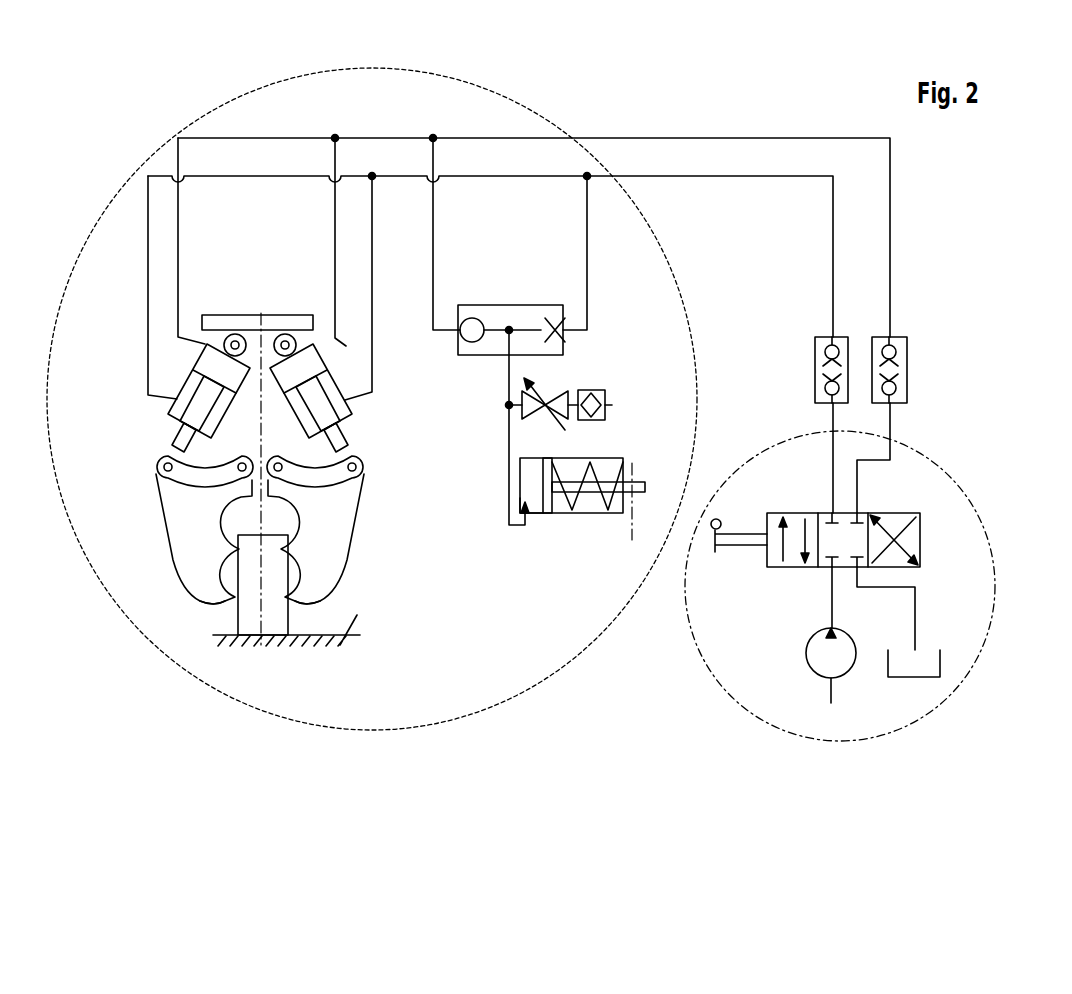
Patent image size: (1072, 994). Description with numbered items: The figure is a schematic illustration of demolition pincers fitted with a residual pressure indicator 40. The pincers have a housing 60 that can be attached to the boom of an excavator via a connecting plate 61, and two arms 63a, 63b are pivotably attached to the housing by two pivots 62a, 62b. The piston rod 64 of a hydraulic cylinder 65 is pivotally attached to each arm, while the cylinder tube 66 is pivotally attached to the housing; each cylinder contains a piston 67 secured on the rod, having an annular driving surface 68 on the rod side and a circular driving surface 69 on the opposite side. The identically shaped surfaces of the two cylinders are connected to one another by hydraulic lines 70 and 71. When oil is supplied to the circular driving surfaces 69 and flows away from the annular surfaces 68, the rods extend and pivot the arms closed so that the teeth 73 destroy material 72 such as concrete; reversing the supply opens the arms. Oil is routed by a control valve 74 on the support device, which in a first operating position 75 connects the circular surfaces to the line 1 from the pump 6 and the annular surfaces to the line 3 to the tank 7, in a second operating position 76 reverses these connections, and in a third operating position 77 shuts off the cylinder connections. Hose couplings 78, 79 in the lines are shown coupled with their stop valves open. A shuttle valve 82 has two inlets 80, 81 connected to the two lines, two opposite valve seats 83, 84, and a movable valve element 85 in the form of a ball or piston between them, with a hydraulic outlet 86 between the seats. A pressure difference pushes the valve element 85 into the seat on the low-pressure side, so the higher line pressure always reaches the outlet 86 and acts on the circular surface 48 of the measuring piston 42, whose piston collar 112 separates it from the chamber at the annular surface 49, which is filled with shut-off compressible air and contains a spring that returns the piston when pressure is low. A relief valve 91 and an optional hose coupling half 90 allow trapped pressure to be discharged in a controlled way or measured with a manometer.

The pressure line 1 is at (828, 588).
The tank line 3 is at (920, 598).
The pump 6 is at (808, 672).
The tank 7 is at (922, 668).
The residual pressure indicator 40 is at (545, 535).
The measuring piston 42 is at (520, 503).
The circular surface 48 is at (542, 472).
The annular surface 49 is at (550, 477).
The housing 60 is at (280, 395).
The connecting plate 61 is at (238, 325).
The pivot 62a is at (293, 478).
The pivot 62b is at (240, 478).
The arm 63a is at (168, 505).
The arm 63b is at (366, 492).
The piston rod 64 is at (170, 434).
The hydraulic cylinder 65 is at (183, 373).
The cylinder tube 66 is at (177, 338).
The piston 67 is at (260, 443).
The annular driving surface 68 is at (150, 396).
The circular driving surface 69 is at (246, 337).
The hydraulic line 70 is at (615, 137).
The hydraulic line 71 is at (637, 177).
The material 72 is at (240, 614).
The teeth 73 is at (185, 562).
The control valve 74 is at (893, 510).
The first operating position 75 is at (913, 513).
The second operating position 76 is at (870, 475).
The third operating position 77 is at (843, 513).
The hydraulic hose coupling 78 is at (815, 363).
The hydraulic hose coupling 79 is at (907, 363).
The inlet 80 is at (578, 336).
The inlet 81 is at (452, 320).
The shuttle valve 82 is at (537, 293).
The valve seat 83 is at (462, 341).
The valve seat 84 is at (557, 313).
The valve element 85 is at (483, 355).
The hydraulic outlet 86 is at (502, 356).
The hose coupling half 90 is at (606, 404).
The relief valve 91 is at (543, 402).
The piston collar 112 is at (545, 513).